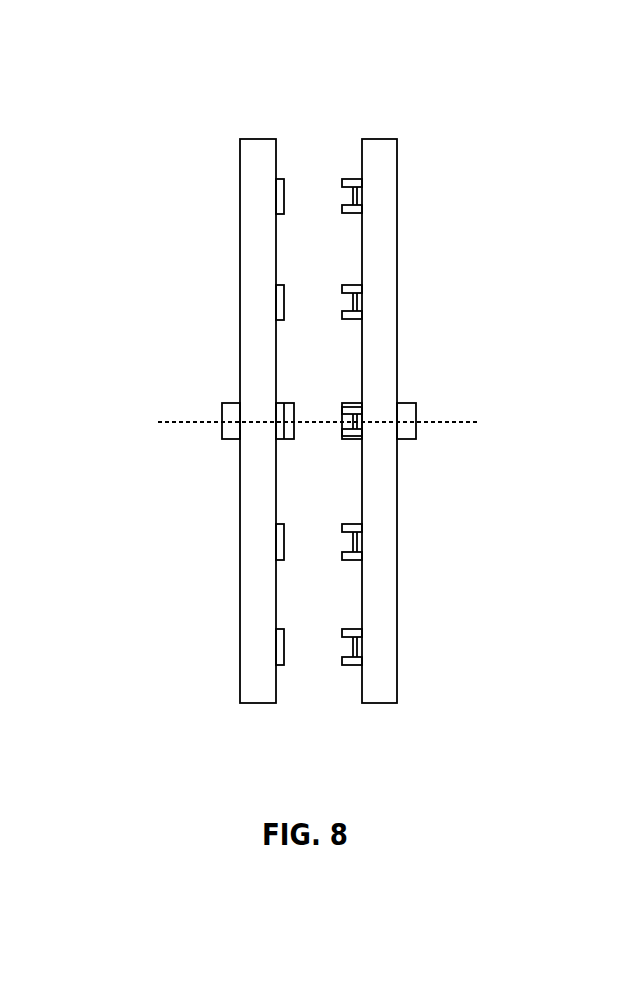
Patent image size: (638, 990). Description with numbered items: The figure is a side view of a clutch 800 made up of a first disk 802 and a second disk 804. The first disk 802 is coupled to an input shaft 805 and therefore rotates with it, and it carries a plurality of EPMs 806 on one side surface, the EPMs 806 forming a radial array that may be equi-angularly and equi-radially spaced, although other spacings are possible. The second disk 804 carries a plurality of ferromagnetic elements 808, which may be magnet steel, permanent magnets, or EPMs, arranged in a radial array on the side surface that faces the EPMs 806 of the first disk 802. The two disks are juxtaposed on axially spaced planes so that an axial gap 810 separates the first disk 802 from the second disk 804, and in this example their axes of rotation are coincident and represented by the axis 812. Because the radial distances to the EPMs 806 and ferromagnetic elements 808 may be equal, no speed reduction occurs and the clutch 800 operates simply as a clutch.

The clutch 800 is at (170, 98).
The first disk 802 is at (383, 139).
The second disk 804 is at (257, 139).
The input shaft 805 is at (407, 403).
The EPMs 806 is at (352, 285).
The ferromagnetic elements 808 is at (280, 178).
The axial gap 810 is at (313, 714).
The axis 812 is at (462, 420).